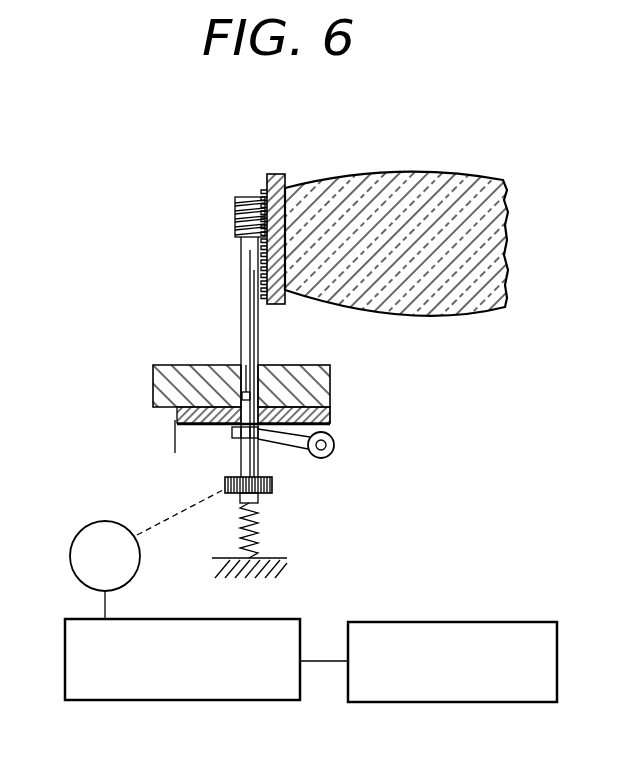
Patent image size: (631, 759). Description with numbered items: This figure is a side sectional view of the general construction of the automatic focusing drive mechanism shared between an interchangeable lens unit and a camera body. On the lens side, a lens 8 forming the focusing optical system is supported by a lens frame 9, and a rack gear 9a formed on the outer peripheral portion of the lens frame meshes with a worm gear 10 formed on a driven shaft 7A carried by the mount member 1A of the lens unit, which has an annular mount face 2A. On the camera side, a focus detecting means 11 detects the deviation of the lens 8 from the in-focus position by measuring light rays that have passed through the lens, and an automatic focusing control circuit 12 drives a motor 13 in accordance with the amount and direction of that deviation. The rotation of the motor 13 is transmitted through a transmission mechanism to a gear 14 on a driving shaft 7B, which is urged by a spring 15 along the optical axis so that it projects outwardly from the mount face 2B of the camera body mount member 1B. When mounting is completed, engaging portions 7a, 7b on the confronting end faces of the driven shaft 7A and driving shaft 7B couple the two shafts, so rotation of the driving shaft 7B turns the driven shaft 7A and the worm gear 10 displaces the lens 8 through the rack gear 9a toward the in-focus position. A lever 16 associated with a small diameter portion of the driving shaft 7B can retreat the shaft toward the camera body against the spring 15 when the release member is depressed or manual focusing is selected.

The lens 8 is at (475, 178).
The lens frame 9 is at (283, 174).
The rack gear 9a is at (263, 192).
The worm gear 10 is at (235, 225).
The driven shaft 7A is at (242, 302).
The engaging portion 7b is at (238, 384).
The engaging portion 7a is at (241, 395).
The mount member 1A is at (330, 377).
The mount face 2A is at (150, 408).
The mount face 2B is at (330, 415).
The mount member 1B is at (175, 420).
The driving shaft 7B is at (237, 433).
The lever 16 is at (303, 450).
The gear 14 is at (272, 487).
The spring 15 is at (255, 557).
The motor 13 is at (110, 518).
The automatic focusing control circuit 12 is at (65, 637).
The focus detecting means 11 is at (557, 638).